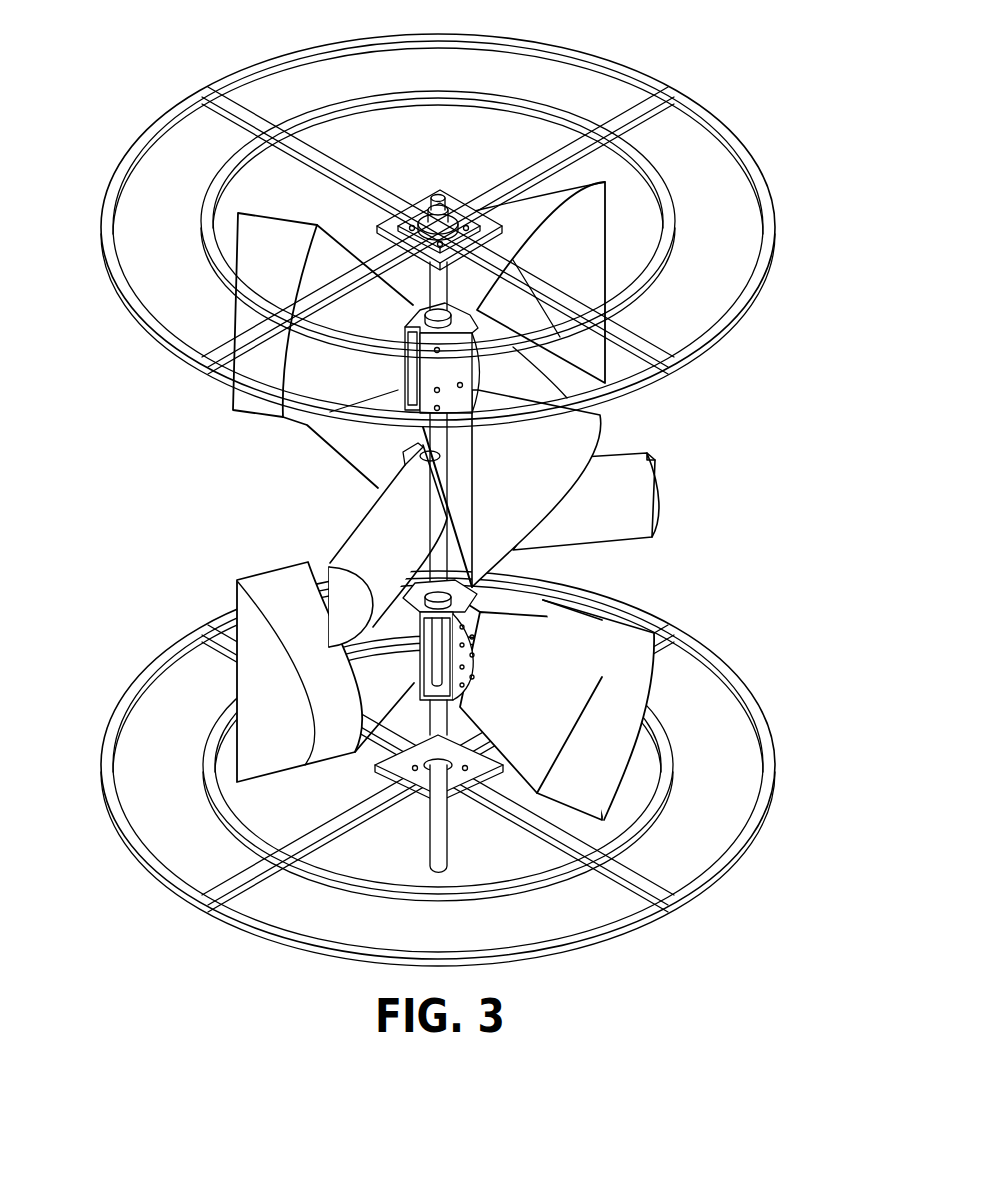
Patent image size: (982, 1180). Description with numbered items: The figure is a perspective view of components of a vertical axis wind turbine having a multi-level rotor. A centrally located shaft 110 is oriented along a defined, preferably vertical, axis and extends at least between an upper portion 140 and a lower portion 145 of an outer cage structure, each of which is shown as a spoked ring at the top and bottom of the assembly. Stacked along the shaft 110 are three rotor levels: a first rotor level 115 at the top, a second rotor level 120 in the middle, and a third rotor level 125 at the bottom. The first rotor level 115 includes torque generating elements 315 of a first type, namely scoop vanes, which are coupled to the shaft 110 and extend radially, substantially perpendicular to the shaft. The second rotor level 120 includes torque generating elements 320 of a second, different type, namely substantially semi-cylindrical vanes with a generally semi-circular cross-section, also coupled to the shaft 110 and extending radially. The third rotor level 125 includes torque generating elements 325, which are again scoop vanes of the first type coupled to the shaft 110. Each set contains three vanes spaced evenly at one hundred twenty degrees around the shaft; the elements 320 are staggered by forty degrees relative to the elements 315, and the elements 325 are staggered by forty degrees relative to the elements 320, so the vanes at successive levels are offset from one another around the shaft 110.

The centrally located shaft 110 is at (446, 212).
The first rotor level 115 is at (85, 200).
The second rotor level 120 is at (85, 405).
The third rotor level 125 is at (85, 605).
The upper portion of outer cage structure 140 is at (636, 68).
The lower portion of outer cage structure 145 is at (730, 668).
The torque generating elements 315 is at (606, 237).
The torque generating elements 320 is at (340, 454).
The torque generating elements 325 is at (375, 495).